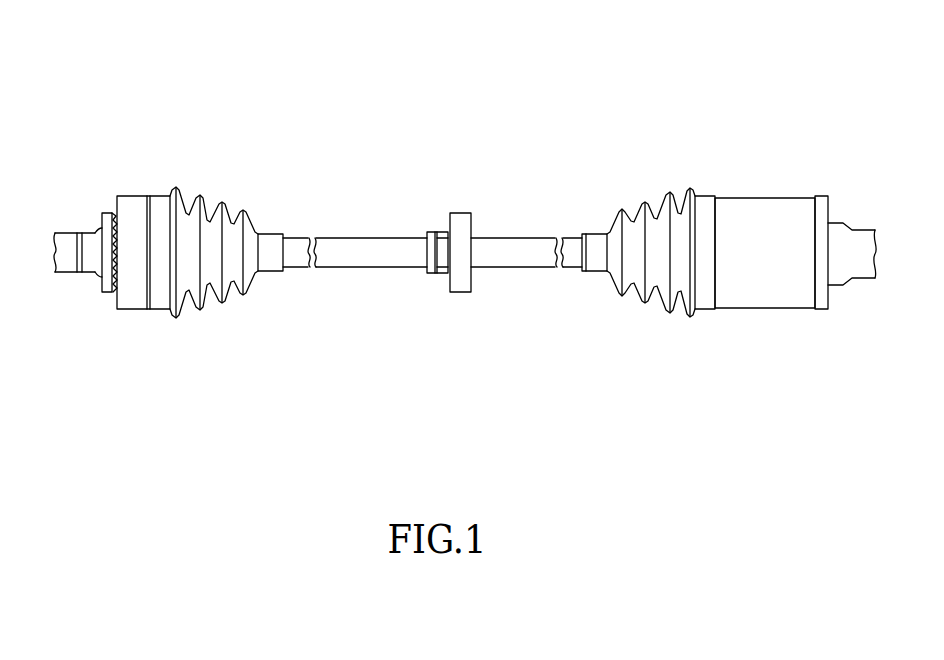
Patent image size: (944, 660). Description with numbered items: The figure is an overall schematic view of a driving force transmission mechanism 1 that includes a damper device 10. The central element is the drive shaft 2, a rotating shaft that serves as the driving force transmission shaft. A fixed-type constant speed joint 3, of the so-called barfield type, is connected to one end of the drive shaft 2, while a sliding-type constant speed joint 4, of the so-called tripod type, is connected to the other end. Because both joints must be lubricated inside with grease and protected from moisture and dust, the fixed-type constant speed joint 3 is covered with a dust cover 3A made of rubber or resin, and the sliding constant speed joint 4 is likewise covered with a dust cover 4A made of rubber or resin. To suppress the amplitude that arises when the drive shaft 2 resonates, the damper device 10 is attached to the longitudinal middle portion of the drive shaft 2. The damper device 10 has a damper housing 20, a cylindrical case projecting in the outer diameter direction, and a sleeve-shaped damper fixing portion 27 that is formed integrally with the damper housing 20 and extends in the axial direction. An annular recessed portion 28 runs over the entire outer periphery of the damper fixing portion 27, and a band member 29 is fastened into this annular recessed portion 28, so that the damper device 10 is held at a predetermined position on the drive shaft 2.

The driving force transmission mechanism 1 is at (252, 72).
The drive shaft 2 is at (357, 238).
The fixed-type constant speed joint 3 is at (170, 174).
The dust cover 3A is at (233, 218).
The sliding-type constant speed joint 4 is at (726, 167).
The dust cover 4A is at (642, 203).
The damper device 10 is at (490, 193).
The damper housing 20 is at (462, 293).
The damper fixing portion 27 is at (427, 232).
The annular recessed portion 28 is at (440, 230).
The band member 29 is at (437, 274).